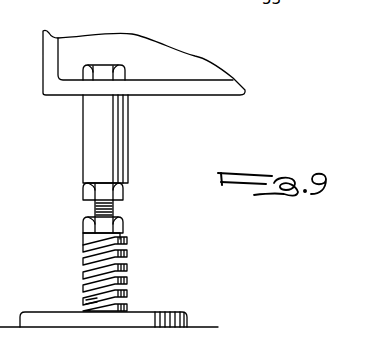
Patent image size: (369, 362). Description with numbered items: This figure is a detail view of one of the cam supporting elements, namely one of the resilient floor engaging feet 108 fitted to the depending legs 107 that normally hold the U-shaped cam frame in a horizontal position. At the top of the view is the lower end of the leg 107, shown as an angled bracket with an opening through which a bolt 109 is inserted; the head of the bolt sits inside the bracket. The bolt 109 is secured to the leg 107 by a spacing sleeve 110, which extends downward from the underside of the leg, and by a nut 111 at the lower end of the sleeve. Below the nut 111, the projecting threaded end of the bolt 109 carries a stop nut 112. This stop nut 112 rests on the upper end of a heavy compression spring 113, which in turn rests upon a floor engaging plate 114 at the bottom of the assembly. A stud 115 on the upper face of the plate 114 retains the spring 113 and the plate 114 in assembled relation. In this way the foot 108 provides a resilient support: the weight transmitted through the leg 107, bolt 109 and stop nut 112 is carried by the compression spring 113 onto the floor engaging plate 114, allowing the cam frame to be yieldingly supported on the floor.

The leg 107 is at (50, 60).
The resilient floor engaging foot 108 is at (98, 272).
The bolt 109 is at (114, 206).
The spacing sleeve 110 is at (122, 156).
The nut 111 is at (122, 192).
The stop nut 112 is at (122, 228).
The compression spring 113 is at (123, 258).
The floor engaging plate 114 is at (164, 313).
The stud 115 is at (92, 302).